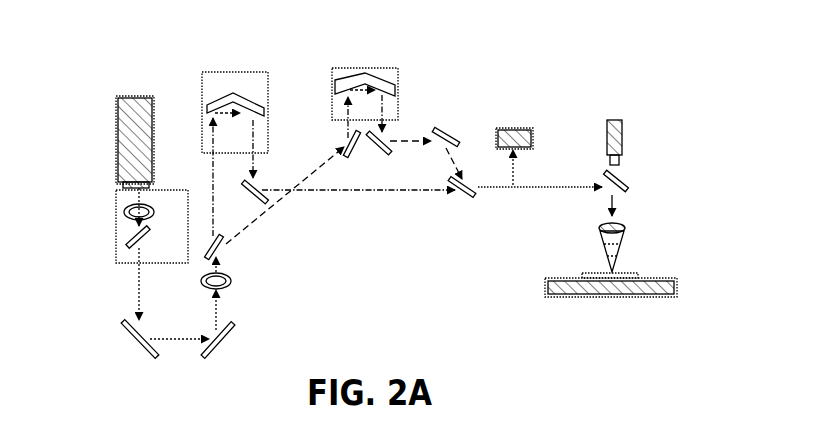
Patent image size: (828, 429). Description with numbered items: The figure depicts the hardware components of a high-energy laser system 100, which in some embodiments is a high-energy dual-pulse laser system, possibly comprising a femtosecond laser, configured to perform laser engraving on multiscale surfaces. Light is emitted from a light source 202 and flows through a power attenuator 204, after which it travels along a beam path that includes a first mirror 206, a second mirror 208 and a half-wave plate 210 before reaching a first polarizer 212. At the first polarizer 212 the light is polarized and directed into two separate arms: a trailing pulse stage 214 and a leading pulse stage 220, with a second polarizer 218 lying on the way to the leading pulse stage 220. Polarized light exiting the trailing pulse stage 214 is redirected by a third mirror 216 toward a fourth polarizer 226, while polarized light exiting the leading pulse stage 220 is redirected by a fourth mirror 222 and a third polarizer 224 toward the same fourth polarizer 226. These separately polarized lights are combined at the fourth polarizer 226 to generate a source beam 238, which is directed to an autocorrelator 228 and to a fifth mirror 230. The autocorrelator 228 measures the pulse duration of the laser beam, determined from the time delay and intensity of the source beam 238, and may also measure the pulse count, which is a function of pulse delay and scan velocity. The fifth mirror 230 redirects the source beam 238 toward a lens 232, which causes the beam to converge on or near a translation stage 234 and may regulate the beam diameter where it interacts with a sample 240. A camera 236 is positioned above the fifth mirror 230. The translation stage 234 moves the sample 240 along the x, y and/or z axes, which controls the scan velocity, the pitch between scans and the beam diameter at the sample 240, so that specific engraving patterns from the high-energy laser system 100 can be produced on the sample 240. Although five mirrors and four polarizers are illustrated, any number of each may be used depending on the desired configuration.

The high-energy laser system 100 is at (436, 52).
The light source 202 is at (118, 106).
The power attenuator 204 is at (116, 212).
The first mirror 206 is at (131, 341).
The second mirror 208 is at (227, 342).
The half-wave plate 210 is at (230, 286).
The first polarizer 212 is at (221, 250).
The trailing pulse stage 214 is at (233, 72).
The third mirror 216 is at (257, 199).
The second polarizer 218 is at (346, 140).
The leading pulse stage 220 is at (378, 68).
The fourth mirror 222 is at (382, 153).
The third polarizer 224 is at (451, 131).
The fourth polarizer 226 is at (465, 196).
The autocorrelator 228 is at (516, 129).
The fifth mirror 230 is at (627, 179).
The lens 232 is at (625, 223).
The translation stage 234 is at (545, 290).
The camera 236 is at (613, 120).
The source beam 238 is at (526, 190).
The sample 240 is at (635, 273).